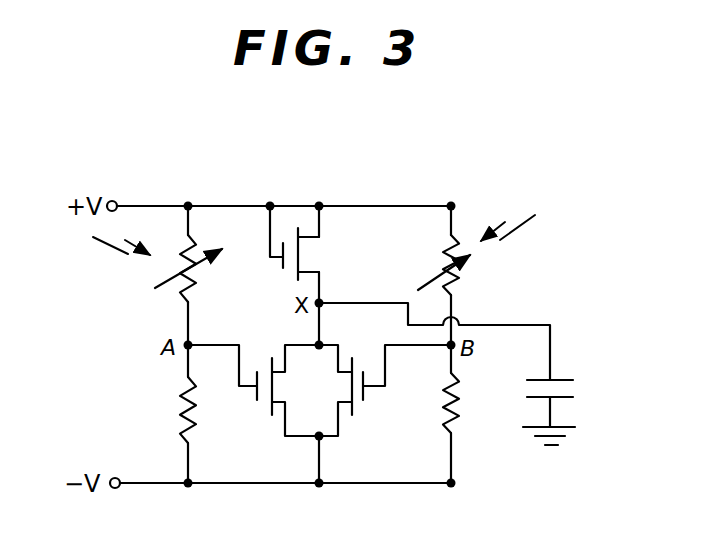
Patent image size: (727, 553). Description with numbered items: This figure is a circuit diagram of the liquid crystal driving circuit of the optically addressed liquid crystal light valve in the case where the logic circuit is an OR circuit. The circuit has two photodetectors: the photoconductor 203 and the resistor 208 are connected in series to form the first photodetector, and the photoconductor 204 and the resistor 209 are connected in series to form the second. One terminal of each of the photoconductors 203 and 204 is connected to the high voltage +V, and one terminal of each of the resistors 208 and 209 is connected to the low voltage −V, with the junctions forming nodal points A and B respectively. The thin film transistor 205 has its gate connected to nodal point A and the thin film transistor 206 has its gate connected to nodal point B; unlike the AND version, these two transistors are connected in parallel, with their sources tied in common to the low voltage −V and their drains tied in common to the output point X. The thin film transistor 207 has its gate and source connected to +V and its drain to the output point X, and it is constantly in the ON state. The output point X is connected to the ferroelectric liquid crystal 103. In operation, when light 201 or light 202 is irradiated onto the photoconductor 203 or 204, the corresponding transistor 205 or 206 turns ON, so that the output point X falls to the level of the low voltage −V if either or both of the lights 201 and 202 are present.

The ferroelectric liquid crystal 103 is at (577, 385).
The light 201 is at (116, 250).
The light 202 is at (530, 222).
The photoconductor 203 is at (170, 293).
The photoconductor 204 is at (467, 265).
The thin film transistor 205 is at (262, 410).
The thin film transistor 206 is at (362, 412).
The thin film transistor 207 is at (282, 270).
The resistor 208 is at (177, 402).
The resistor 209 is at (462, 416).